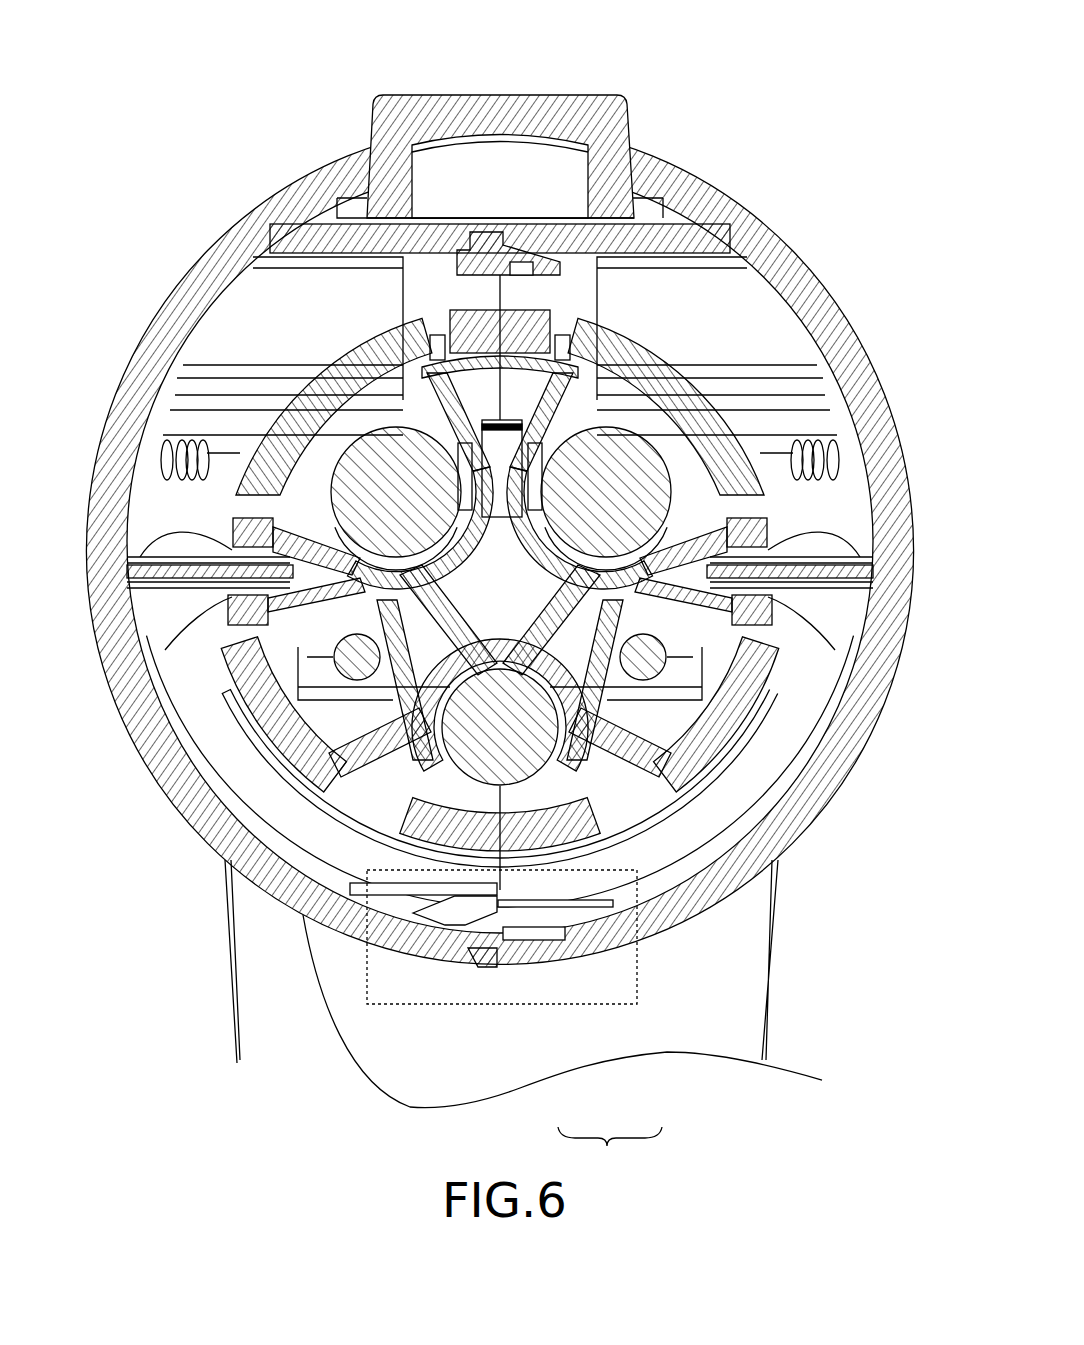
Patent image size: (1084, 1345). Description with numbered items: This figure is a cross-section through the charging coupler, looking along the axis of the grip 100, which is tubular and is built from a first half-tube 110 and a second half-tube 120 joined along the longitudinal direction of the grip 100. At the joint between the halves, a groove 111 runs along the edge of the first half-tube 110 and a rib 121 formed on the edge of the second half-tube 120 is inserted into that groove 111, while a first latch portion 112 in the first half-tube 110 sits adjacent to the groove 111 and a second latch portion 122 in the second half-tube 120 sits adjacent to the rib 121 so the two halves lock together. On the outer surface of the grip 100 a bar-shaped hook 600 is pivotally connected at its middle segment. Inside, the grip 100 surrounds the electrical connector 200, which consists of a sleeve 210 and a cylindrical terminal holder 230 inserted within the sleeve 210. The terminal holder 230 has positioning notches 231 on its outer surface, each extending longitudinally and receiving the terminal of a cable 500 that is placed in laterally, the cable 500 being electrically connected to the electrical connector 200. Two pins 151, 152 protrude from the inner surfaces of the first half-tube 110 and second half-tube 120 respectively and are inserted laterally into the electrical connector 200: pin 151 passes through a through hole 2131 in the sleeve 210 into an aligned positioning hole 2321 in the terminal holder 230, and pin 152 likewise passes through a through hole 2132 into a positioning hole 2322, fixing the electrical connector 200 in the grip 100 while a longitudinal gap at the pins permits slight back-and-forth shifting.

The grip 100 is at (610, 1150).
The first half-tube 110 is at (188, 1040).
The second half-tube 120 is at (670, 920).
The groove 111 is at (481, 233).
The first latch portion 112 is at (550, 272).
The rib 121 is at (500, 262).
The second latch portion 122 is at (530, 264).
The electrical connector 200 is at (647, 327).
The sleeve 210 is at (658, 366).
The terminal holder 230 is at (595, 290).
The positioning notch 231 is at (697, 505).
The through hole 2131 is at (210, 550).
The through hole 2132 is at (790, 550).
The positioning hole 2321 is at (250, 684).
The positioning hole 2322 is at (750, 684).
The pin 151 is at (190, 592).
The pin 152 is at (810, 592).
The cable 500 is at (373, 469).
The hook 600 is at (433, 103).